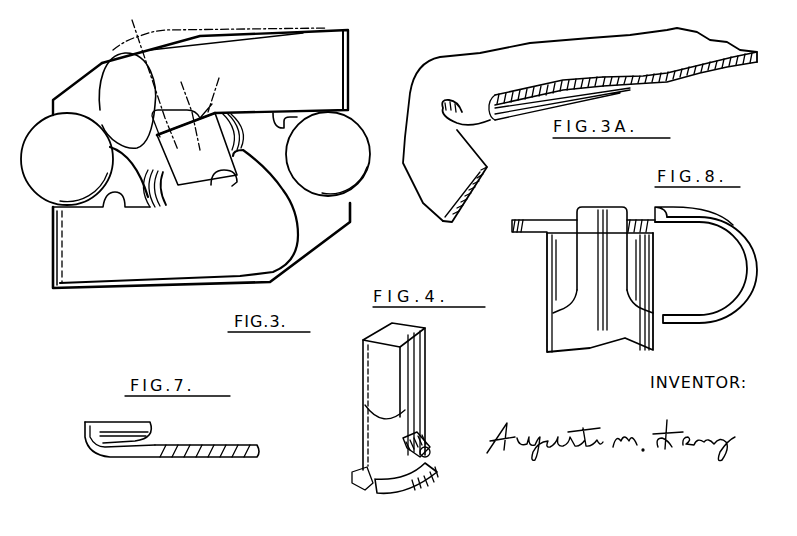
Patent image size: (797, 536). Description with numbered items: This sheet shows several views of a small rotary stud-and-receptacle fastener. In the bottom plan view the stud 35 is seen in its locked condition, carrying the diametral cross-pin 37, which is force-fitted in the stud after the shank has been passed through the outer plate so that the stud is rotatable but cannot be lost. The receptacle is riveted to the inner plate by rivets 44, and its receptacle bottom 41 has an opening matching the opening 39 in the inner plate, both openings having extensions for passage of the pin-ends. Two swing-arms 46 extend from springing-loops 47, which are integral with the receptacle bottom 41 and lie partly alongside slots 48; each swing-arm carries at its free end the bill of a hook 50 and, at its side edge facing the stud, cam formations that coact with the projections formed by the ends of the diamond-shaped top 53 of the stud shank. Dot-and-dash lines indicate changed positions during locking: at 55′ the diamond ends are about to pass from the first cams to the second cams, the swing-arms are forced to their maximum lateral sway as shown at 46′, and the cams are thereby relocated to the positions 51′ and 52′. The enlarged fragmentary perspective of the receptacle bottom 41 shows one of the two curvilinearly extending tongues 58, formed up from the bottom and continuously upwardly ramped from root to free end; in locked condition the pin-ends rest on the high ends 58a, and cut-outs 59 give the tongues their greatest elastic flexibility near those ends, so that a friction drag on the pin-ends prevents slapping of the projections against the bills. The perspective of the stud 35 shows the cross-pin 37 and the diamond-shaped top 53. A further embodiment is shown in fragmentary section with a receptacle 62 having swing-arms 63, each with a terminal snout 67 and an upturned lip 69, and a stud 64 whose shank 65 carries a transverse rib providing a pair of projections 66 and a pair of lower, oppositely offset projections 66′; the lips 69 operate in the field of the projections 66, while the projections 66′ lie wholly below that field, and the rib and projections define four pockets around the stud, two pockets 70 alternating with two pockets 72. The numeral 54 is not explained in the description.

In FIG. 3, the stud 35 is at (182, 192).
In FIG. 4, the stud 35 is at (427, 411).
In FIG. 4, the diametral cross-pin 37 is at (432, 452).
In FIG. 3, the opening 39 is at (220, 185).
In FIG. 3A, the opening 39 is at (638, 77).
In FIG. 3, the receptacle bottom 41 is at (313, 237).
In FIG. 3A, the receptacle bottom 41 is at (440, 87).
In FIG. 3, the rivets 44 is at (195, 158).
In FIG. 3, the swing-arms 46 is at (128, 87).
In FIG. 3, the swing-arms at maximum lateral sway 46′ is at (193, 28).
In FIG. 3, the springing-loops 47 is at (321, 57).
In FIG. 3, the slots 48 is at (286, 122).
In FIG. 3, the hook 50 is at (213, 180).
In FIG. 3, the cam position 51′ is at (185, 107).
In FIG. 3, the cam position 52′ is at (146, 77).
In FIG. 3, the diamond-shaped top 53 is at (194, 144).
In FIG. 4, the diamond-shaped top 53 is at (408, 333).
In FIG. 3, the boss 54 is at (226, 131).
In FIG. 3, the diamond-ends position 55′ is at (214, 87).
In FIG. 3A, the tongues 58 is at (562, 90).
In FIG. 3A, the high ends 58a is at (491, 100).
In FIG. 3A, the cut-outs 59 is at (452, 130).
In FIG. 8, the receptacle 62 is at (743, 232).
In FIG. 8, the swing-arms 63 is at (693, 225).
In FIG. 7, the swing-arms 63 is at (217, 452).
In FIG. 8, the stud 64 is at (547, 318).
In FIG. 8, the shank 65 is at (627, 333).
In FIG. 8, the projections 66 is at (603, 213).
In FIG. 8, the projections 66′ is at (547, 260).
In FIG. 8, the terminal snout 67 is at (540, 194).
In FIG. 8, the lip 69 is at (640, 212).
In FIG. 7, the lip 69 is at (135, 432).
In FIG. 8, the pockets 70 is at (635, 292).
In FIG. 8, the pockets 72 is at (560, 287).